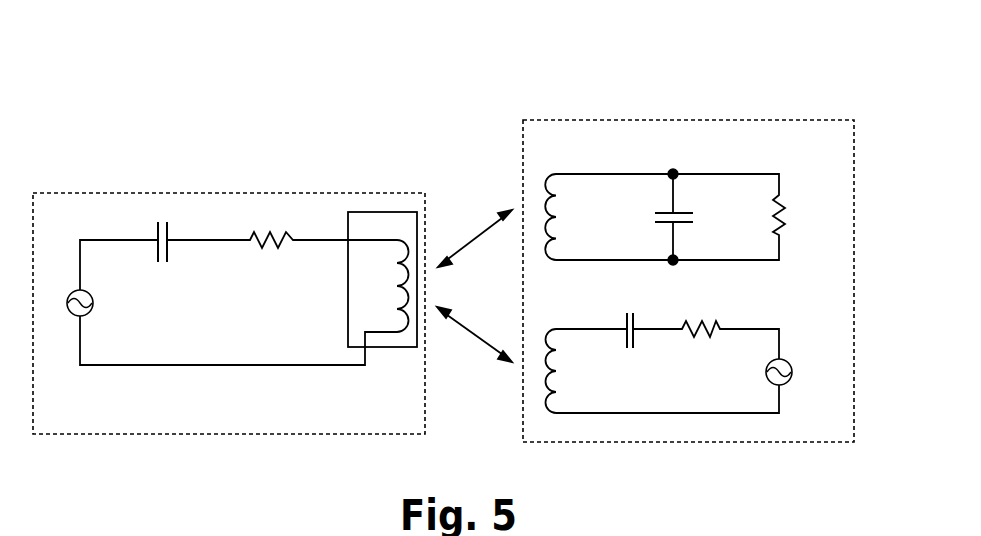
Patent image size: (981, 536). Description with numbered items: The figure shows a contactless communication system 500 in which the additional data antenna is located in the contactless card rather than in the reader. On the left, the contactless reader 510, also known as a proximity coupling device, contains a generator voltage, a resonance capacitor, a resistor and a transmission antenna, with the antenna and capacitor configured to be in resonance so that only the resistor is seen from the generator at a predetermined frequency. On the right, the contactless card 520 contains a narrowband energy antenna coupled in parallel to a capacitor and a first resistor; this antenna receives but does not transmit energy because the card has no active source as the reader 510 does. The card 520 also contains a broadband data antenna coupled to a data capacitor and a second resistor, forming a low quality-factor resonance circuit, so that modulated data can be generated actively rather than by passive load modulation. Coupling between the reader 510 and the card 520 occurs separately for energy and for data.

The contactless communication system 500 is at (692, 78).
The contactless reader 510 is at (340, 193).
The contactless card 520 is at (728, 120).